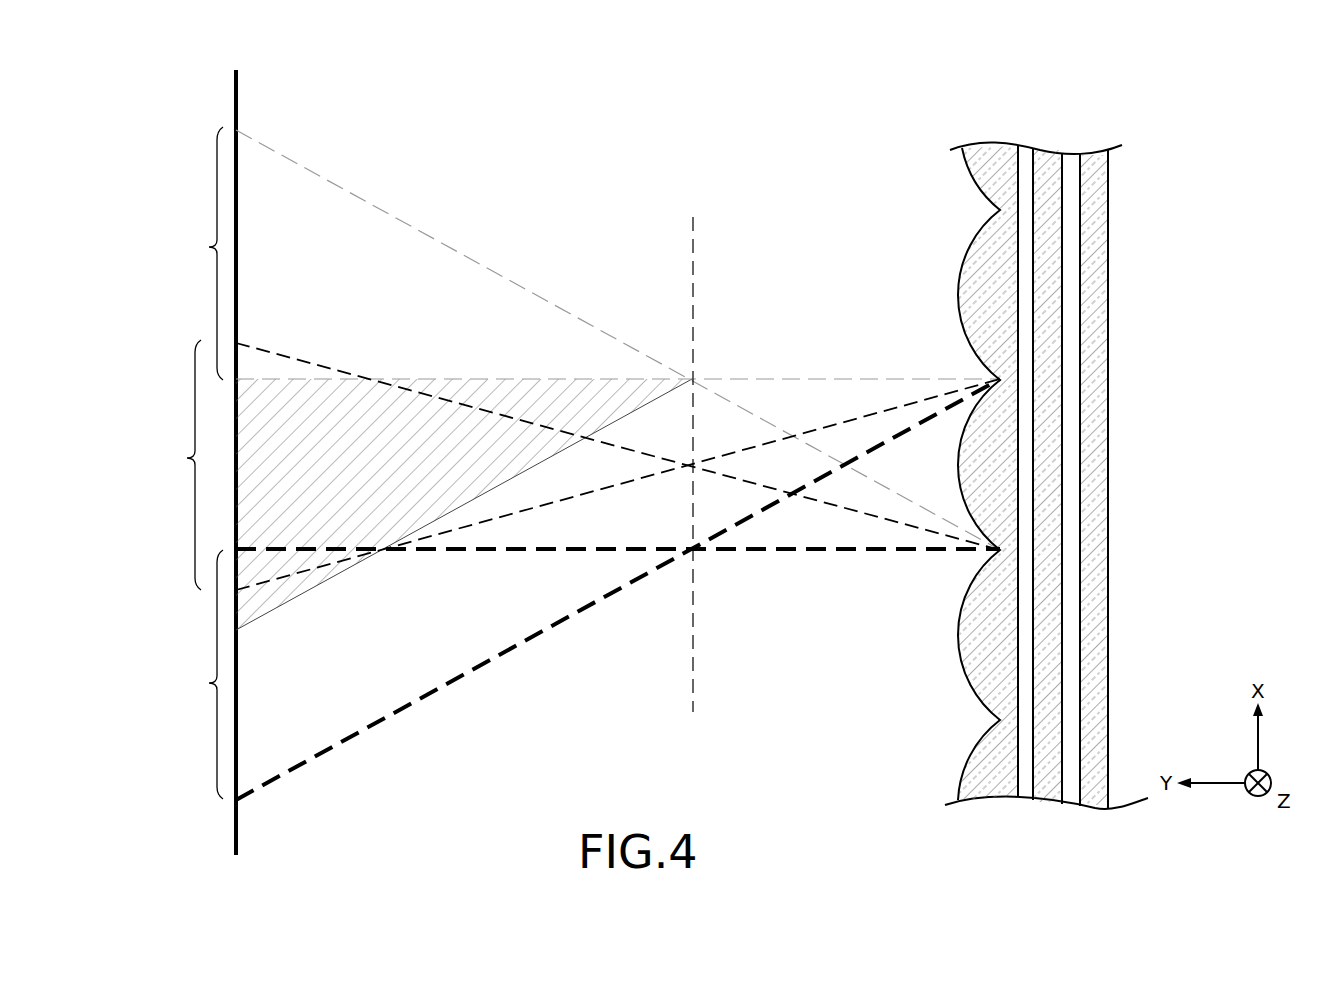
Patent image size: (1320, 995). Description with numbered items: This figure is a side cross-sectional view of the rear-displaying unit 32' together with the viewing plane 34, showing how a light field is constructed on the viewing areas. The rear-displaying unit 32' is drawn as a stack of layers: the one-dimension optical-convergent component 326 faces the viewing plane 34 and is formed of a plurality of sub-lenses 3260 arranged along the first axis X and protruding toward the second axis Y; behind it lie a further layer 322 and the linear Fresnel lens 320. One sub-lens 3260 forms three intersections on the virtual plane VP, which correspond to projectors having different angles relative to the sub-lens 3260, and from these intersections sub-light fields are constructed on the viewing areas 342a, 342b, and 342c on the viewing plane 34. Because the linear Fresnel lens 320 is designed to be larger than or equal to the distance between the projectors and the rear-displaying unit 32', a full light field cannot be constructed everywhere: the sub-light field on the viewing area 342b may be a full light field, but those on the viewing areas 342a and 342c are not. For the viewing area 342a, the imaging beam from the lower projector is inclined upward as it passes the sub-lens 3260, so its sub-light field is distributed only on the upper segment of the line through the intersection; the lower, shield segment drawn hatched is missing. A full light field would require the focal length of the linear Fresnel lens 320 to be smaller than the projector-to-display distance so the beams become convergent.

The viewing plane 34 is at (238, 97).
The viewing area 342a is at (170, 253).
The viewing area 342b is at (159, 465).
The viewing area 342c is at (180, 674).
The virtual plane VP is at (693, 247).
The rear-displaying unit 32' is at (1042, 416).
The one-dimension optical-convergent component 326 is at (941, 450).
The sub-lens 3260 is at (990, 290).
The display layer 322 is at (1048, 170).
The linear Fresnel lens 320 is at (1120, 187).